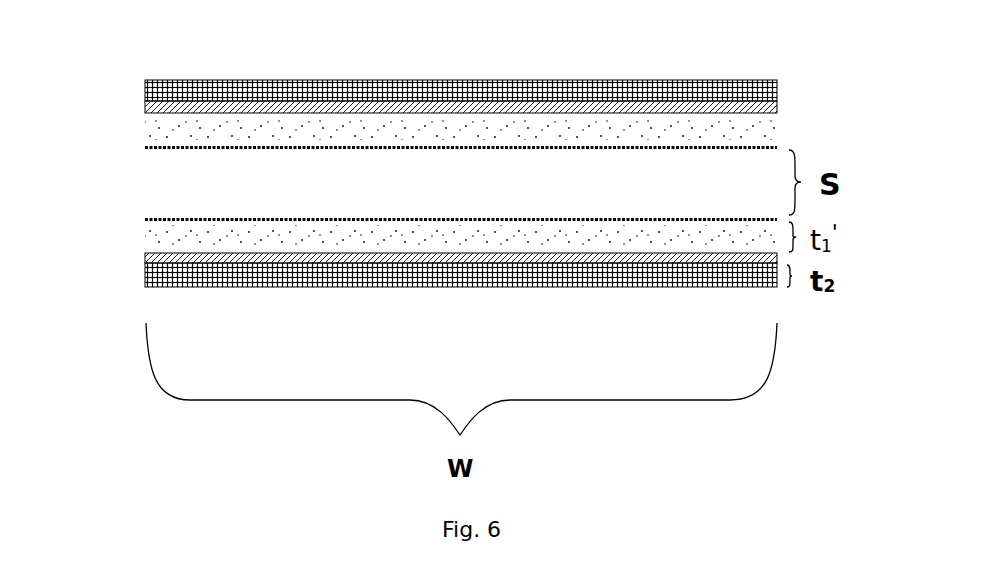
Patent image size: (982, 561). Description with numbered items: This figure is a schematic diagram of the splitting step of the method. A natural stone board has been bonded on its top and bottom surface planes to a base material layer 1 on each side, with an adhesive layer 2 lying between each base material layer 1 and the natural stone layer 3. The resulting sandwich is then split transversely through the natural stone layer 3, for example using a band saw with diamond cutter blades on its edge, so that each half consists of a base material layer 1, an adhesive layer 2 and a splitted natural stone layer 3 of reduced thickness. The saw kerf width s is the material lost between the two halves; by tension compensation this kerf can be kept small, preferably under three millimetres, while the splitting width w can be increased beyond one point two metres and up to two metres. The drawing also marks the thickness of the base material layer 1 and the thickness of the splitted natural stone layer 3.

The base material layer 1 is at (145, 88).
The adhesive layer 2 is at (777, 110).
The natural stone layer 3 is at (145, 135).